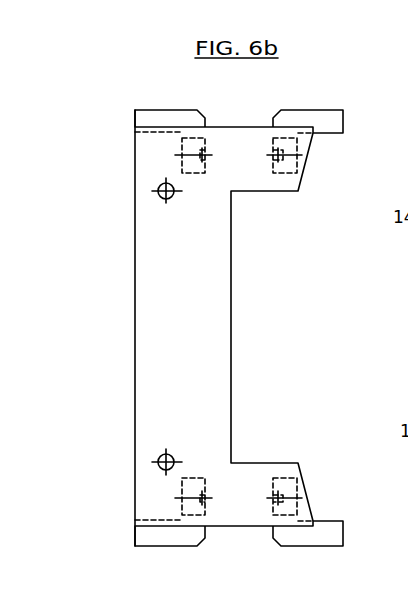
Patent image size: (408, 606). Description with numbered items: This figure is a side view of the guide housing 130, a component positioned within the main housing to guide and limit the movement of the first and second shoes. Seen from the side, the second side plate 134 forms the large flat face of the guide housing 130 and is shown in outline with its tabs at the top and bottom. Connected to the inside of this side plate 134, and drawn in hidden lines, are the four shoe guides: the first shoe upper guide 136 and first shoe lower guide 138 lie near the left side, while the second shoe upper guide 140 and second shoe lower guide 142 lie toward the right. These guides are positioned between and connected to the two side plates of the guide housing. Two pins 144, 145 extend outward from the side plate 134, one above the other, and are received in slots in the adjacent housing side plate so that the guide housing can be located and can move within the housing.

The guide housing 130 is at (247, 328).
The second side plate 134 is at (148, 333).
The first shoe upper guide 136 is at (182, 150).
The first shoe lower guide 138 is at (182, 507).
The second shoe upper guide 140 is at (298, 148).
The second shoe lower guide 142 is at (298, 508).
The pin 144 is at (159, 198).
The pin 145 is at (160, 455).